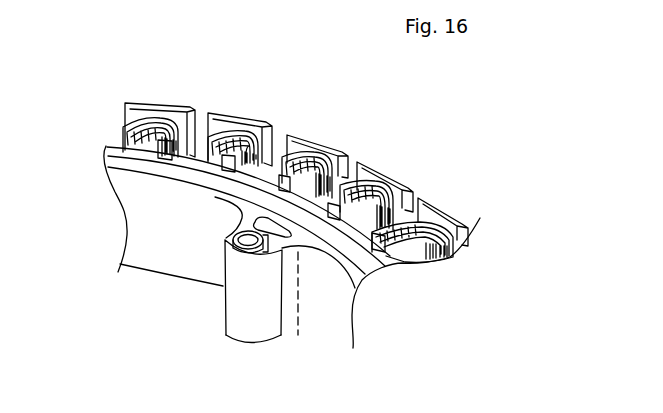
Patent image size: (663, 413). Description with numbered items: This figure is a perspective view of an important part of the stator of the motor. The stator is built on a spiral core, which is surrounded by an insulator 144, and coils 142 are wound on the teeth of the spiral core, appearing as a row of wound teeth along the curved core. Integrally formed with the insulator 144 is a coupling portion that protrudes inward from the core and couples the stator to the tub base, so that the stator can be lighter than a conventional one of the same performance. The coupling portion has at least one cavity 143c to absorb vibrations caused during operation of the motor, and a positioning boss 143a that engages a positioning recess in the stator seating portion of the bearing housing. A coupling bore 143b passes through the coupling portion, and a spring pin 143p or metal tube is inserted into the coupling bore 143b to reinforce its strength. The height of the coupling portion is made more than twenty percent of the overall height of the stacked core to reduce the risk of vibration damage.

The coil 142 is at (150, 128).
The positioning boss 143a is at (225, 290).
The coupling bore 143b is at (272, 337).
The cavity 143c is at (242, 210).
The spring pin 143p is at (228, 234).
The insulator 144 is at (130, 170).